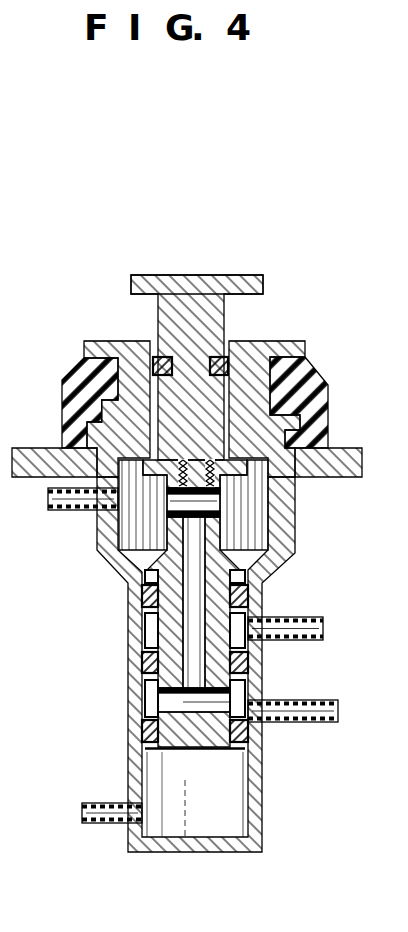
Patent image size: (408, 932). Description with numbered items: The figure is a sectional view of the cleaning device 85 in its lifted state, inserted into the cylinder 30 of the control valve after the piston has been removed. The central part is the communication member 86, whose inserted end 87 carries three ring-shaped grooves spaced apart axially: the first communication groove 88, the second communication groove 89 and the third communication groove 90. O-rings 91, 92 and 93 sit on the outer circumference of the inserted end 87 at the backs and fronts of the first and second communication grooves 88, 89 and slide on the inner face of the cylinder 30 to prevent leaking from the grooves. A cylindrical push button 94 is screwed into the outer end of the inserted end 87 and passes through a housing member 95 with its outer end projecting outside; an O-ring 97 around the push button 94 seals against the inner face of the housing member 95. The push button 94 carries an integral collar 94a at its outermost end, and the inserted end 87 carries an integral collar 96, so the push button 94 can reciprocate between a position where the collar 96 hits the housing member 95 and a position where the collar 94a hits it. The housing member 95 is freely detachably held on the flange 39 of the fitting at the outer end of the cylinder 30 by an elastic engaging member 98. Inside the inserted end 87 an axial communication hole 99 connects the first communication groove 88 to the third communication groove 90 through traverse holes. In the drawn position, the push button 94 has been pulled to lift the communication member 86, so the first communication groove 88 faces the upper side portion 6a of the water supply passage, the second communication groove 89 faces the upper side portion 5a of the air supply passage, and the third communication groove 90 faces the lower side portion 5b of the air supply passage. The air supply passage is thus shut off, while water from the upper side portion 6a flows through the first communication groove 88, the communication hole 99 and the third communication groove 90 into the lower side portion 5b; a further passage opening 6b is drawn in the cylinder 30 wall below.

The cleaning device 85 is at (97, 320).
The push button 94 is at (160, 318).
The collar 94a is at (255, 284).
The O-ring 97 is at (226, 368).
The housing member 95 is at (130, 384).
The elastic engaging member 98 is at (63, 404).
The flange 39 is at (296, 423).
The cylinder 30 is at (288, 508).
The collar 96 is at (241, 465).
The communication hole 99 is at (198, 538).
The communication member 86 is at (178, 520).
The third communication groove 90 is at (147, 557).
The inserted end 87 is at (170, 627).
The second communication groove 89 is at (148, 641).
The first communication groove 88 is at (152, 692).
The O-ring 93 is at (247, 593).
The O-ring 92 is at (252, 672).
The O-ring 91 is at (248, 736).
The upper side portion of the air supply passage 5a is at (300, 629).
The lower side portion of the air supply passage 5b is at (65, 506).
The upper side portion of the water supply passage 6a is at (302, 722).
The conduit 6b is at (98, 823).